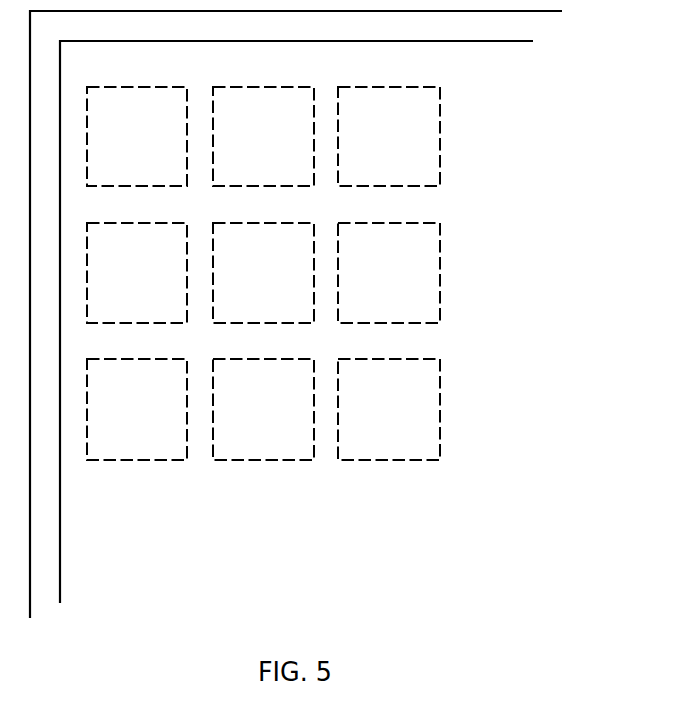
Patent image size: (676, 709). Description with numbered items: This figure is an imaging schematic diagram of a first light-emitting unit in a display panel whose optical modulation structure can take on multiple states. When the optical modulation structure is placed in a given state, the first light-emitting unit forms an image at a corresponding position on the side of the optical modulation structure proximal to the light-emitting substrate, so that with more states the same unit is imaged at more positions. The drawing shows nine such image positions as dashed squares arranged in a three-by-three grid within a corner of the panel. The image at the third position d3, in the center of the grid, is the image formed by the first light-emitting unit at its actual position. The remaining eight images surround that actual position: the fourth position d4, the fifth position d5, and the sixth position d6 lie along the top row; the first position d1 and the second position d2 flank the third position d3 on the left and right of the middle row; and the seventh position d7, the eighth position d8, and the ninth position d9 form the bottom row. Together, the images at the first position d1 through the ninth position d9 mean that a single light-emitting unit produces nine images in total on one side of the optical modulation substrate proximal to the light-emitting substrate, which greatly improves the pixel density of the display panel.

The first position d1 is at (137, 273).
The second position d2 is at (389, 273).
The third position d3 is at (263, 273).
The fourth position d4 is at (137, 136).
The fifth position d5 is at (263, 136).
The sixth position d6 is at (389, 136).
The seventh position d7 is at (137, 409).
The eighth position d8 is at (263, 409).
The ninth position d9 is at (389, 409).